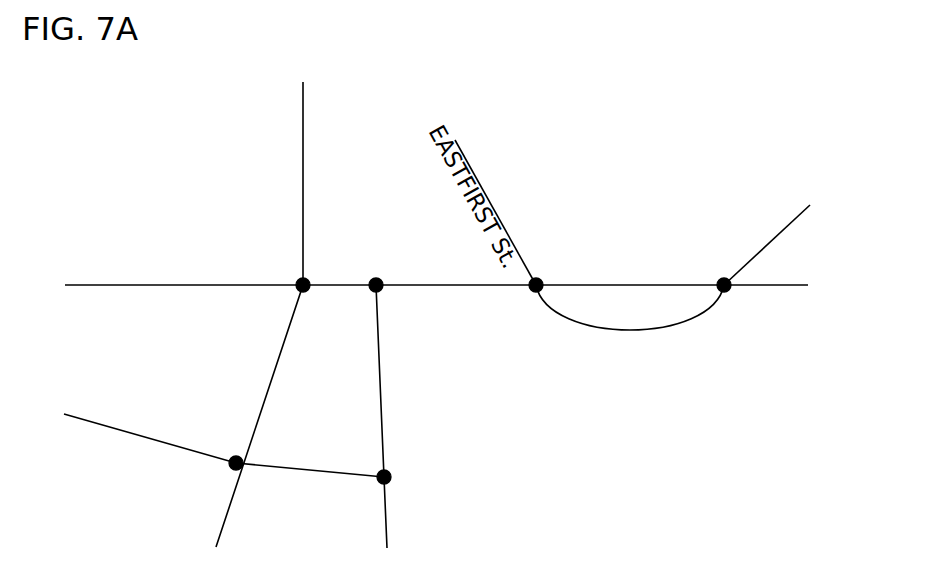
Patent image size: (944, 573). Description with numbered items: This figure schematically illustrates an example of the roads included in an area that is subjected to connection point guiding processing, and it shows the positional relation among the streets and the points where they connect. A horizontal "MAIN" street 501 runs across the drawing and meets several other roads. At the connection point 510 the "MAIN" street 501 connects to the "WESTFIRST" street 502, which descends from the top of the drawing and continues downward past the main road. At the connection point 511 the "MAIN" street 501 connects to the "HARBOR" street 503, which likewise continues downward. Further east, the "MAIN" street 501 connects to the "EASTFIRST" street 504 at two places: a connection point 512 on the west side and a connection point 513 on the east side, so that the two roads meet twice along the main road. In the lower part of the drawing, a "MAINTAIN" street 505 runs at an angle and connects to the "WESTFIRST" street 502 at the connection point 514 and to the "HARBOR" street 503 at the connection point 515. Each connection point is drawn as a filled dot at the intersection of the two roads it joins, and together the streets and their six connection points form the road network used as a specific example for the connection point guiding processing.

The "MAIN" street 501 is at (207, 283).
The "WESTFIRST" street 502 is at (308, 137).
The "HARBOR" street 503 is at (382, 433).
The "EASTFIRST" street 504 is at (767, 242).
The "MAINTAIN" street 505 is at (103, 422).
The connection point 510 is at (306, 283).
The connection point 511 is at (378, 283).
The connection point 512 is at (542, 283).
The connection point 513 is at (733, 293).
The connection point 514 is at (242, 468).
The connection point 515 is at (391, 483).